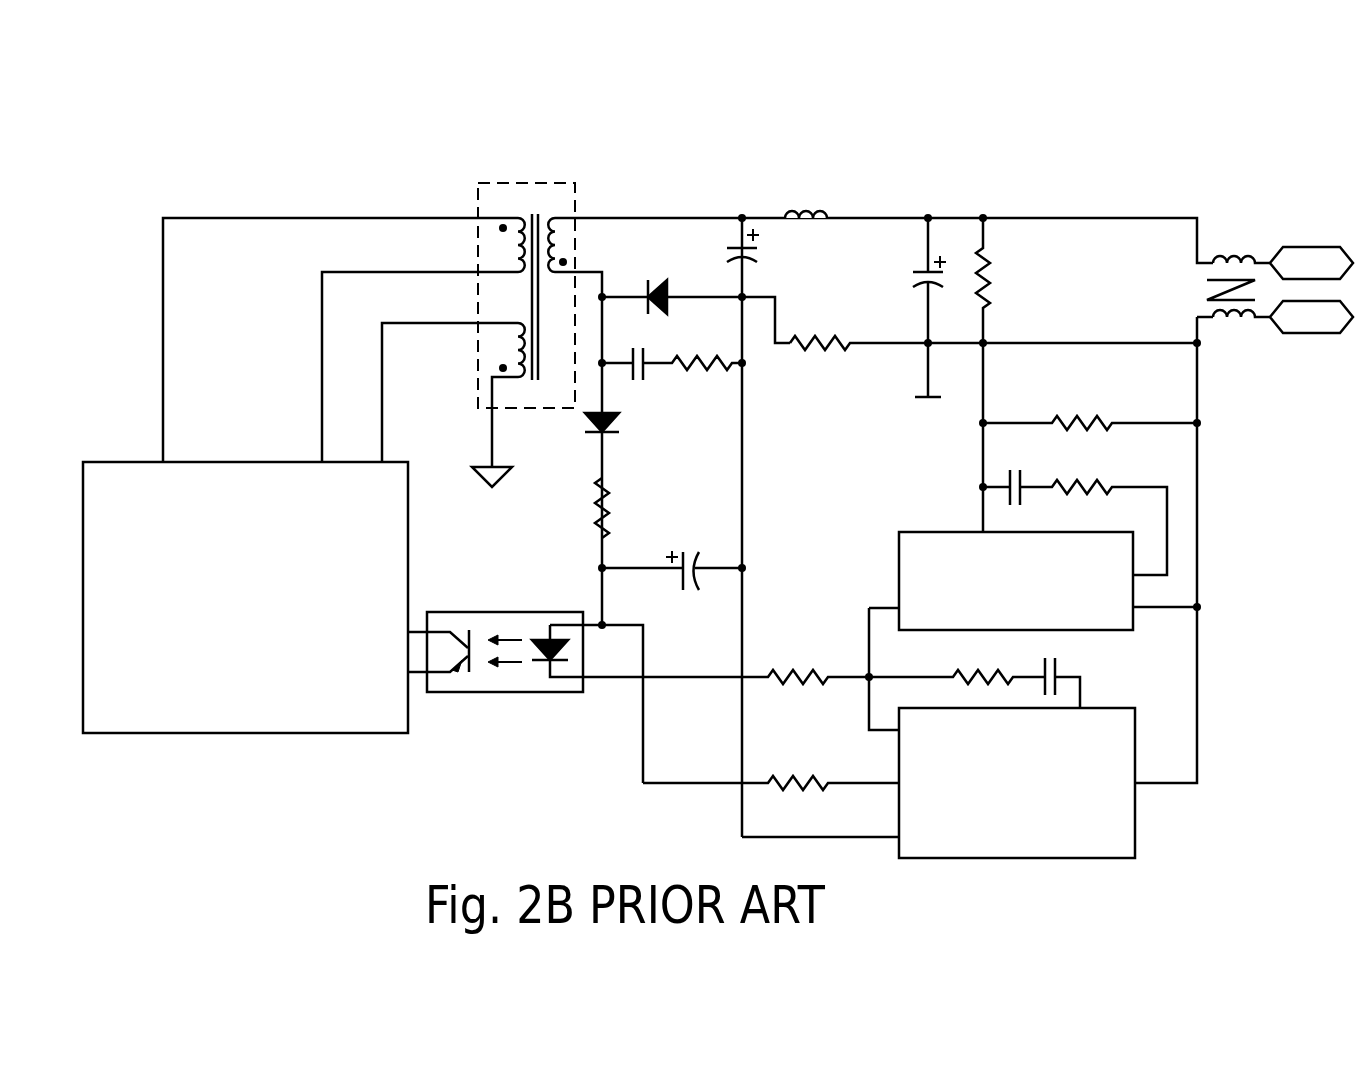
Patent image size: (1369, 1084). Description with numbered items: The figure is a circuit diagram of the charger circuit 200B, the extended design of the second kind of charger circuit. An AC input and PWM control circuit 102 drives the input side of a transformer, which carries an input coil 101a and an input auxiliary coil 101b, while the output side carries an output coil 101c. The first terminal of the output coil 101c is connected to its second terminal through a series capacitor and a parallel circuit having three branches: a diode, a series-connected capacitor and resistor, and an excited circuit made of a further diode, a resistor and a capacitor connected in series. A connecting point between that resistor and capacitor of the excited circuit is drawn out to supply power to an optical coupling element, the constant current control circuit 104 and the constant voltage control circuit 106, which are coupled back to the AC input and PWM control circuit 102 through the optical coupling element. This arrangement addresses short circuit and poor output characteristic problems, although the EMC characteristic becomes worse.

The charger circuit 200B is at (802, 85).
The input coil 101a is at (500, 250).
The input auxiliary coil 101b is at (500, 344).
The output coil 101c is at (557, 236).
The AC input and PWM control circuit 102 is at (300, 718).
The constant current control circuit 104 is at (1133, 597).
The constant voltage control circuit 106 is at (1135, 757).